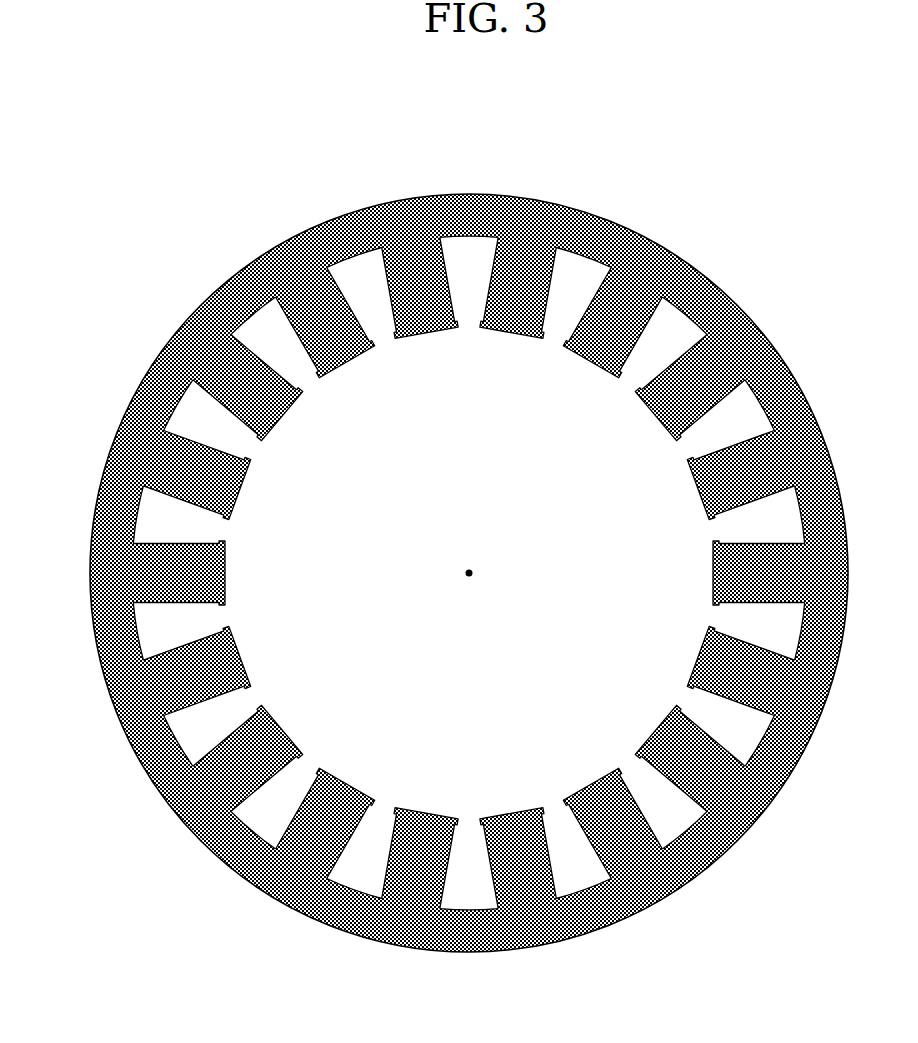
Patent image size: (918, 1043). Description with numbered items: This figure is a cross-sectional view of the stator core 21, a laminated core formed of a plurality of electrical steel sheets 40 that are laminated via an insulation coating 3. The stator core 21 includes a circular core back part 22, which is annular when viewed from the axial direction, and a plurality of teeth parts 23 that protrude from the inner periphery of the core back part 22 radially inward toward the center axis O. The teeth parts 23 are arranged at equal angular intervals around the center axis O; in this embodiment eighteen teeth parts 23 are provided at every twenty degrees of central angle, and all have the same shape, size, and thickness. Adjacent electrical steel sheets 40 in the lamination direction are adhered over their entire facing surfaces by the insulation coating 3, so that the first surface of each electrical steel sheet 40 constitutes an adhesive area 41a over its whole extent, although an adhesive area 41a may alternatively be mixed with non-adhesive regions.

The insulation coating 3 is at (742, 333).
The electrical steel sheet 40 is at (252, 285).
The stator core 21 is at (693, 119).
The core back part 22 is at (665, 255).
The teeth part 23 is at (598, 286).
The adhesive area 41a is at (638, 392).
The center axis O is at (469, 573).